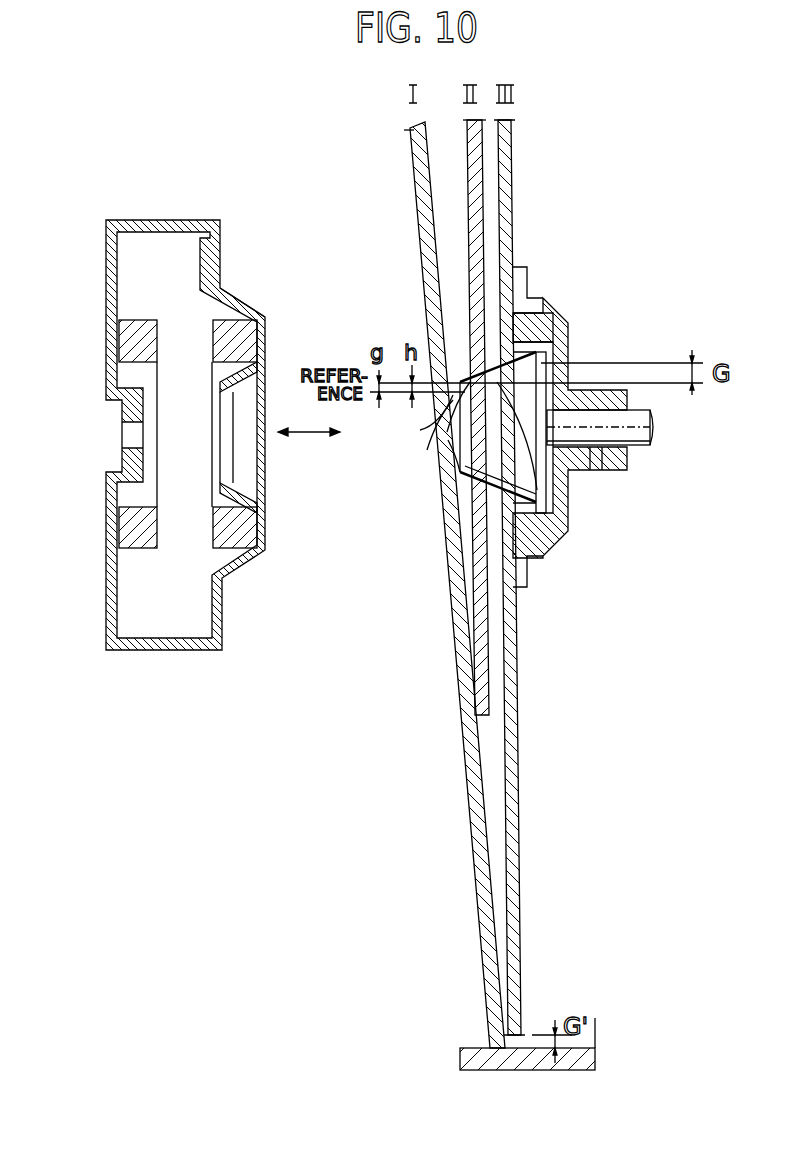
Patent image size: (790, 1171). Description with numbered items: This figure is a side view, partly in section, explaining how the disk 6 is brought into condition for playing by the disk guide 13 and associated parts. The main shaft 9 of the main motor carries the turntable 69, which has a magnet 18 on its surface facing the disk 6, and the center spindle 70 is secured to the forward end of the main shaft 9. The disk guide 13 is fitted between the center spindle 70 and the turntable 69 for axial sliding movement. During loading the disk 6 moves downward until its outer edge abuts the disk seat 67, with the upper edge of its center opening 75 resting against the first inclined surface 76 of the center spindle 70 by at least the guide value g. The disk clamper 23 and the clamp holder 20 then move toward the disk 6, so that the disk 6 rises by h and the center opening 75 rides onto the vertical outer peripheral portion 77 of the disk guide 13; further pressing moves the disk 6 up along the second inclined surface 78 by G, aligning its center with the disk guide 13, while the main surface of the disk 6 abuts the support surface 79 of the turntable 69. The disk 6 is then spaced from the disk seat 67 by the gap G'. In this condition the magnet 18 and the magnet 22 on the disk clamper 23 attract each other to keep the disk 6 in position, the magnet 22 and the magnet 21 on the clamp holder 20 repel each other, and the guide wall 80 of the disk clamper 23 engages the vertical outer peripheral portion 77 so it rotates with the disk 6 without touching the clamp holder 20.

The disk 6 is at (417, 177).
The main shaft 9 is at (626, 461).
The disk guide 13 is at (548, 488).
The magnet 18 is at (536, 322).
The clamp holder 20 is at (189, 641).
The magnet 21 is at (143, 325).
The magnet 22 is at (238, 540).
The disk clamper 23 is at (252, 312).
The disk seat 67 is at (583, 1058).
The turntable 69 is at (566, 336).
The center spindle 70 is at (450, 462).
The center opening 75 is at (448, 497).
The first inclined surface 76 is at (452, 406).
The vertical outer peripheral portion 77 is at (455, 428).
The second inclined surface 78 is at (550, 528).
The support surface 79 is at (522, 284).
The guide wall 80 is at (233, 397).